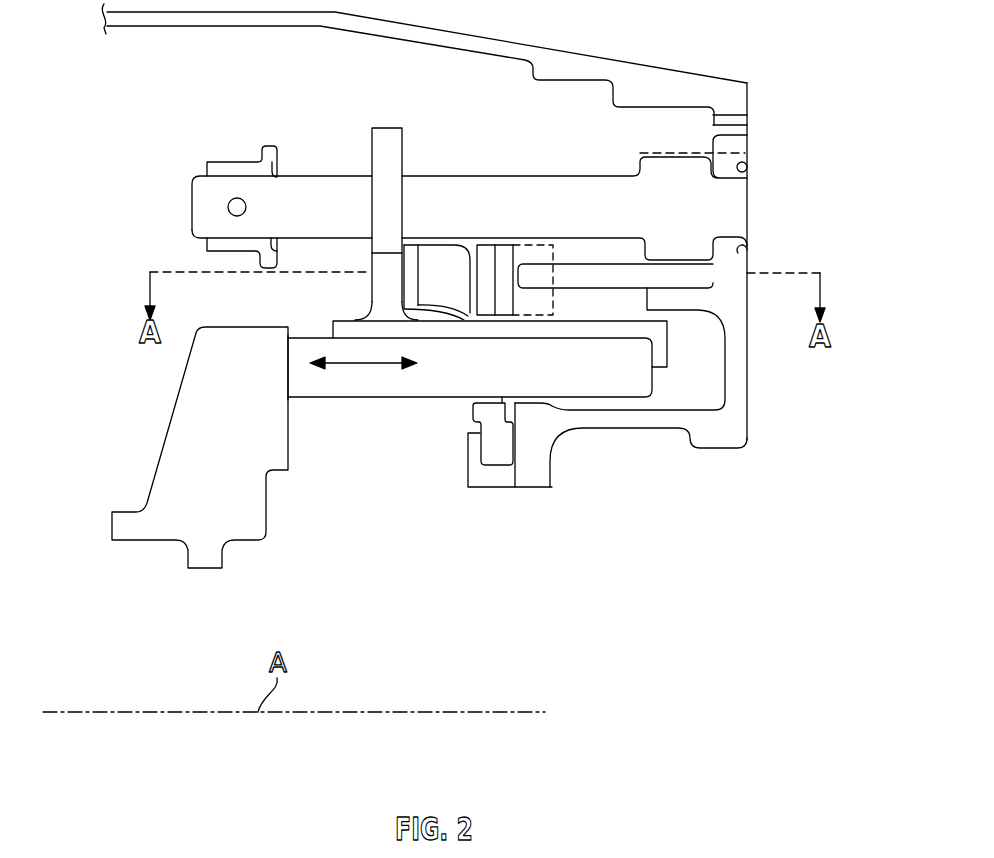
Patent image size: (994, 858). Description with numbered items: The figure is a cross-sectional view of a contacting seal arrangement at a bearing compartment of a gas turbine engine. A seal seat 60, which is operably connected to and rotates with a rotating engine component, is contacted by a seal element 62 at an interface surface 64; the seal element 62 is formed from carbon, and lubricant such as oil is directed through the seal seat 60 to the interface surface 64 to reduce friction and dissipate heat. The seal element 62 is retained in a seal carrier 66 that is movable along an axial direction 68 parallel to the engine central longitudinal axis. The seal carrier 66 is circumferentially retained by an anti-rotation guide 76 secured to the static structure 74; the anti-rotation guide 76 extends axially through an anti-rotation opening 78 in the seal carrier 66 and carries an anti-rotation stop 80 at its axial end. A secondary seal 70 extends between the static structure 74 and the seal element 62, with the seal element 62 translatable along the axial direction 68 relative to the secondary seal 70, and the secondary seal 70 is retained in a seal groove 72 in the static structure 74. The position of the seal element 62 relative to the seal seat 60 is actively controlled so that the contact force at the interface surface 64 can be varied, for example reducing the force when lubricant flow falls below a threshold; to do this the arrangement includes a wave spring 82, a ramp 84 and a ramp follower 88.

The seal seat 60 is at (160, 476).
The seal element 62 is at (385, 380).
The interface surface 64 is at (286, 379).
The seal carrier 66 is at (458, 333).
The axial direction 68 is at (345, 368).
The secondary seal 70 is at (498, 440).
The seal groove 72 is at (497, 463).
The static structure 74 is at (643, 84).
The anti-rotation guide 76 is at (553, 192).
The anti-rotation opening 78 is at (386, 183).
The anti-rotation stop 80 is at (248, 160).
The wave spring 82 is at (433, 258).
The ramp 84 is at (545, 252).
The ramp follower 88 is at (481, 247).